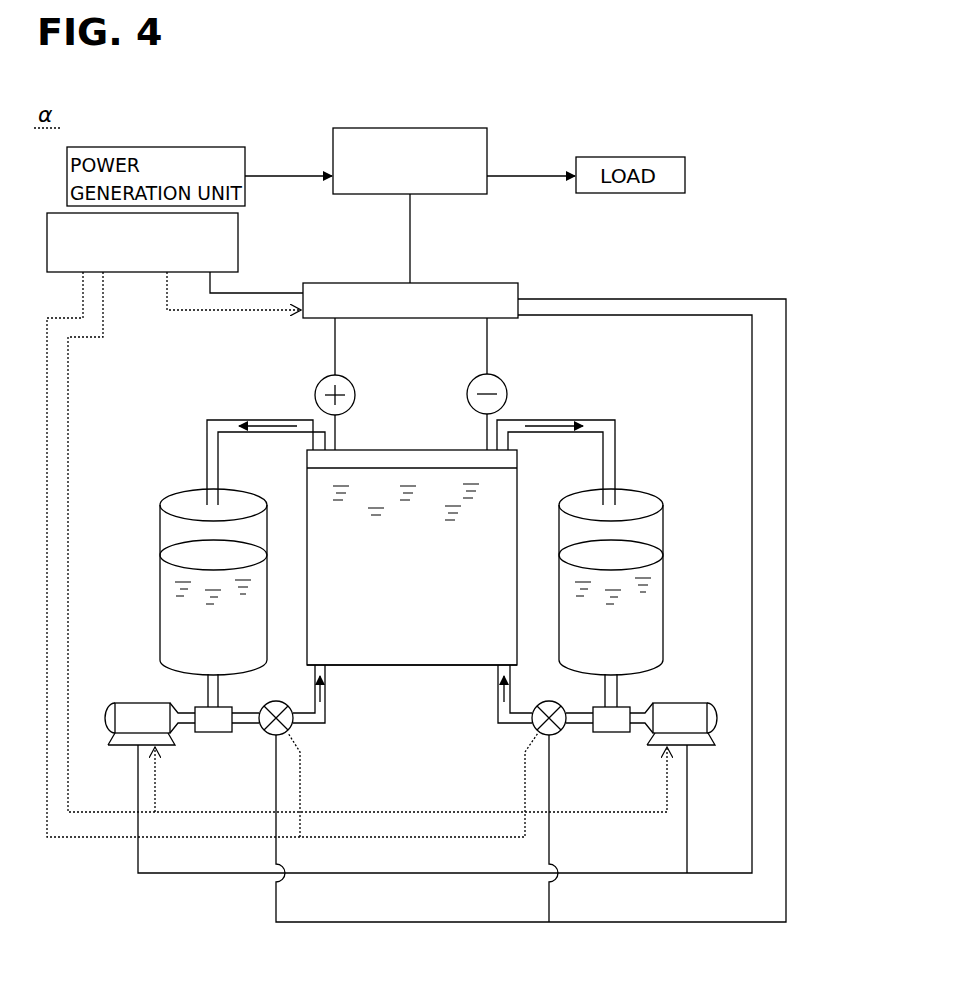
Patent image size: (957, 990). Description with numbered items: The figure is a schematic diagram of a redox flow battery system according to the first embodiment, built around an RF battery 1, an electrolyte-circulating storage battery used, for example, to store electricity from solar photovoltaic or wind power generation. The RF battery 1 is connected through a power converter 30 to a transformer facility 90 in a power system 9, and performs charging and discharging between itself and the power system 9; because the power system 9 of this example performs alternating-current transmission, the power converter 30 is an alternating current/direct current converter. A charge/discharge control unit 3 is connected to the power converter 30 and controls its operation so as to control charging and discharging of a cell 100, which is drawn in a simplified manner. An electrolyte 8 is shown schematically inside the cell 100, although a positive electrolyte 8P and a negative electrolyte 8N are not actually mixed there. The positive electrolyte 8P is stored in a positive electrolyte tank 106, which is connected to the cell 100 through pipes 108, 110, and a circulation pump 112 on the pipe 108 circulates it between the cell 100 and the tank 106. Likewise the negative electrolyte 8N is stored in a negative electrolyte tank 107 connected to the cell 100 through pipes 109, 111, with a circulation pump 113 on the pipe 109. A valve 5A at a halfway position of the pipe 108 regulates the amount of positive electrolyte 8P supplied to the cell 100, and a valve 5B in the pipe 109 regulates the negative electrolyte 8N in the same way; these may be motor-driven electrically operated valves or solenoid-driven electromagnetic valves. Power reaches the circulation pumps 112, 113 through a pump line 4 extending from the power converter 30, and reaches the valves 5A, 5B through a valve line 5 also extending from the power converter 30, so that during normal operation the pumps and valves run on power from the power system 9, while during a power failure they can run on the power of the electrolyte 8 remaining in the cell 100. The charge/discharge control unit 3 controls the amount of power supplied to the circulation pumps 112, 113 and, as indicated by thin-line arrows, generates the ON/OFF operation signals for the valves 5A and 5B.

The RF battery 1 is at (659, 404).
The charge/discharge control unit 3 is at (238, 240).
The pump line 4 is at (615, 314).
The valve line 5 is at (670, 298).
The valve 5A is at (265, 730).
The valve 5B is at (560, 730).
The electrolyte 8 is at (424, 480).
The positive electrolyte 8P is at (168, 615).
The negative electrolyte 8N is at (648, 612).
The power system 9 is at (287, 172).
The power converter 30 is at (462, 283).
The transformer facility 90 is at (438, 128).
The cell 100 is at (408, 668).
The positive electrolyte tank 106 is at (175, 494).
The negative electrolyte tank 107 is at (649, 494).
The pipe 108 is at (316, 728).
The pipe 109 is at (512, 728).
The pipe 110 is at (215, 419).
The pipe 111 is at (603, 419).
The circulation pump 112 is at (125, 700).
The circulation pump 113 is at (682, 700).